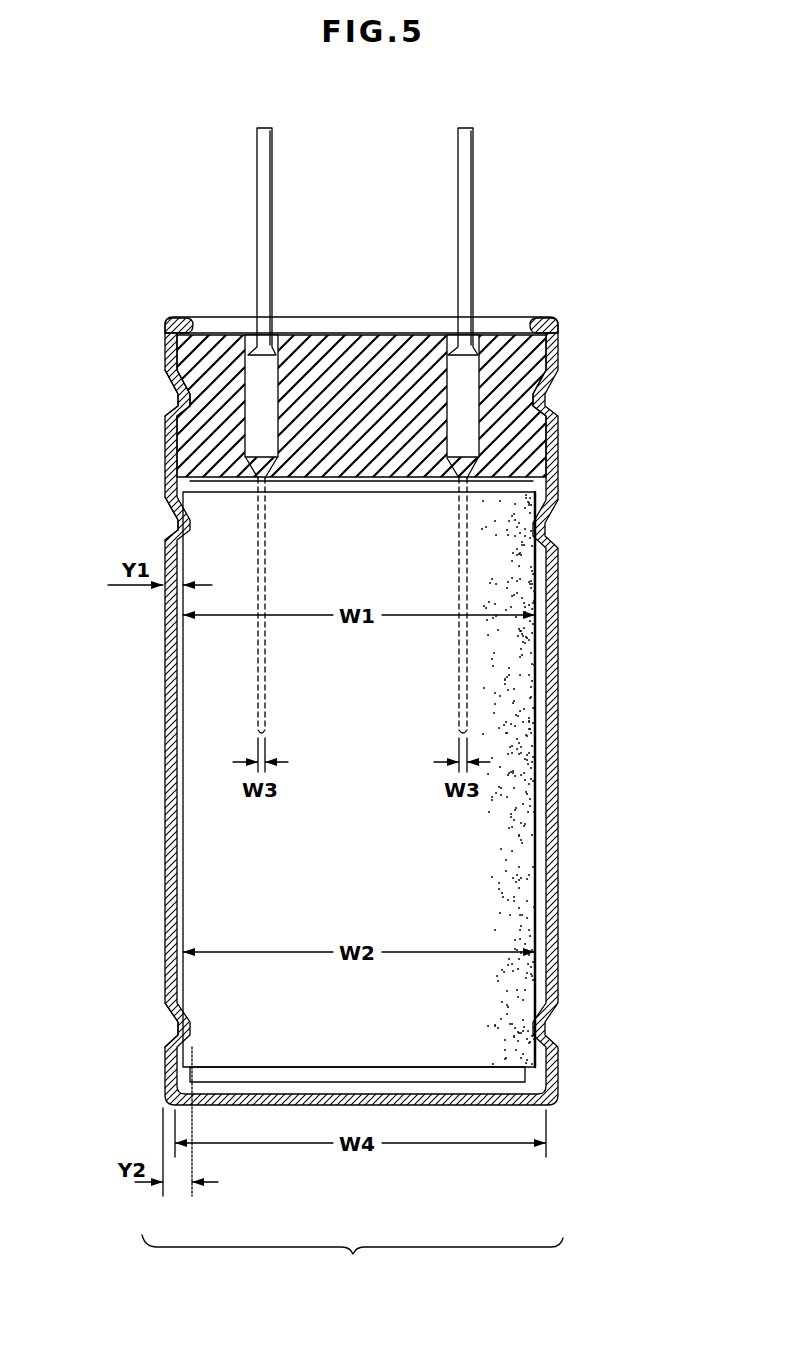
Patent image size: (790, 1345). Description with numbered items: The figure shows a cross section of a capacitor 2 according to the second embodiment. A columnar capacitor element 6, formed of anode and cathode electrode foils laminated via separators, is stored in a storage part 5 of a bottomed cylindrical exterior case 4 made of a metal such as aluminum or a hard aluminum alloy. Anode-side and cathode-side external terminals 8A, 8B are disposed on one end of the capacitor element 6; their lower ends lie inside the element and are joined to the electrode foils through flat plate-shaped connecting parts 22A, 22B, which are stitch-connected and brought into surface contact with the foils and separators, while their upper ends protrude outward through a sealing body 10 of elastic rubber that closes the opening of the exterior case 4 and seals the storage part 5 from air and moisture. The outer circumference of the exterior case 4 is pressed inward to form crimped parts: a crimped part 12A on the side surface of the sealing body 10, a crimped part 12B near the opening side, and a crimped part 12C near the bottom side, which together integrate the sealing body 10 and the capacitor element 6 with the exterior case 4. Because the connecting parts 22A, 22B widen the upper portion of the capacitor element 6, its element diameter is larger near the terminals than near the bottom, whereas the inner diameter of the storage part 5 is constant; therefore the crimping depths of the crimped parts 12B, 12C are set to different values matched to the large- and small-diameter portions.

The capacitor 2 is at (352, 1263).
The exterior case 4 is at (557, 1068).
The storage part 5 is at (540, 772).
The capacitor element 6 is at (522, 886).
The external terminal 8A is at (474, 196).
The external terminal 8B is at (273, 196).
The sealing body 10 is at (560, 381).
The crimped part 12A is at (178, 403).
The crimped part 12B is at (183, 531).
The crimped part 12C is at (180, 1025).
The connecting part 22A is at (468, 684).
The connecting part 22B is at (256, 680).